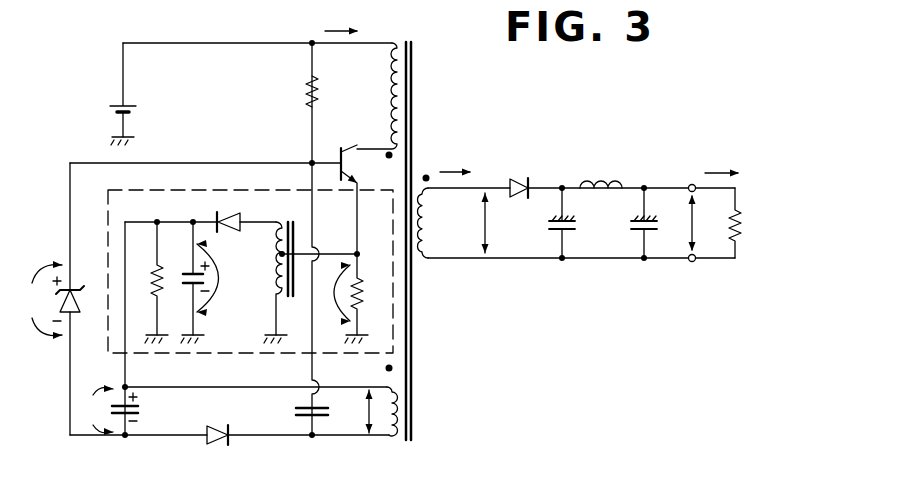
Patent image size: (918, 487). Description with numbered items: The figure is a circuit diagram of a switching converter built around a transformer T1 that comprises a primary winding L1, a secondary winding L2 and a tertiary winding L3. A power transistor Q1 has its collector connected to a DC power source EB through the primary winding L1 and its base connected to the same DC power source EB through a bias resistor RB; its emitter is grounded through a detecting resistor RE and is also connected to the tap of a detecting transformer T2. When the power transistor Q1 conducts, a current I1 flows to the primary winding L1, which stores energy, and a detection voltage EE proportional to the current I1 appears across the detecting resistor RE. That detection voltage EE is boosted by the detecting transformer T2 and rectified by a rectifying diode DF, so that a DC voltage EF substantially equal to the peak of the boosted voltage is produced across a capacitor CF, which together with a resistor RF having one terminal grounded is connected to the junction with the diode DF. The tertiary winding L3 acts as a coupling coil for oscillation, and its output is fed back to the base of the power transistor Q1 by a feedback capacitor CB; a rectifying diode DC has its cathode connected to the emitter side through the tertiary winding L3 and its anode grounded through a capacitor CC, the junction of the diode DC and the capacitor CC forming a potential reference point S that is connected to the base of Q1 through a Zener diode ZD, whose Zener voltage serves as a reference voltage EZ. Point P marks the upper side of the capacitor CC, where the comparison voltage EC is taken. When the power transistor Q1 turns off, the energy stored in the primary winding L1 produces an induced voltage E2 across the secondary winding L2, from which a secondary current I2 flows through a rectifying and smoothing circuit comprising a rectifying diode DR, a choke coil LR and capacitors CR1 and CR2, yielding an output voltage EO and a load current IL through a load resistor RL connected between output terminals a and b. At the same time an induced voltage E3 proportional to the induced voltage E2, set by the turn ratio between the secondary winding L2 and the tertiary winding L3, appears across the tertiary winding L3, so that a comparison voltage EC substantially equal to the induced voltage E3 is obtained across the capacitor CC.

The DC power source EB is at (143, 94).
The current flowing to the primary winding I1 is at (340, 17).
The bias resistor RB is at (294, 88).
The primary winding L1 is at (377, 101).
The transformer T1 is at (410, 38).
The power transistor Q1 is at (345, 184).
The rectifying diode DF is at (200, 240).
The resistor RF is at (148, 282).
The capacitor CF is at (185, 282).
The DC voltage EF is at (220, 278).
The detecting transformer T2 is at (285, 267).
The detecting resistor RE is at (368, 298).
The detection voltage EE is at (335, 293).
The Zener diode ZD is at (81, 317).
The reference voltage EZ is at (41, 300).
The node P is at (127, 384).
The capacitor CC is at (144, 411).
The comparison voltage EC is at (96, 410).
The potential reference point S is at (125, 438).
The rectifying diode DC is at (223, 456).
The feedback capacitor CB is at (298, 416).
The induced voltage E3 is at (355, 411).
The tertiary winding L3 is at (386, 420).
The secondary winding L2 is at (438, 217).
The secondary current I2 is at (454, 155).
The induced voltage E2 is at (492, 223).
The rectifying diode DR is at (526, 167).
The capacitor CR1 is at (548, 223).
The choke coil LR is at (601, 163).
The capacitor CR2 is at (631, 224).
The output terminal a is at (692, 184).
The output terminal b is at (692, 262).
The output voltage EO is at (700, 223).
The load current IL is at (722, 155).
The load resistor RL is at (752, 223).